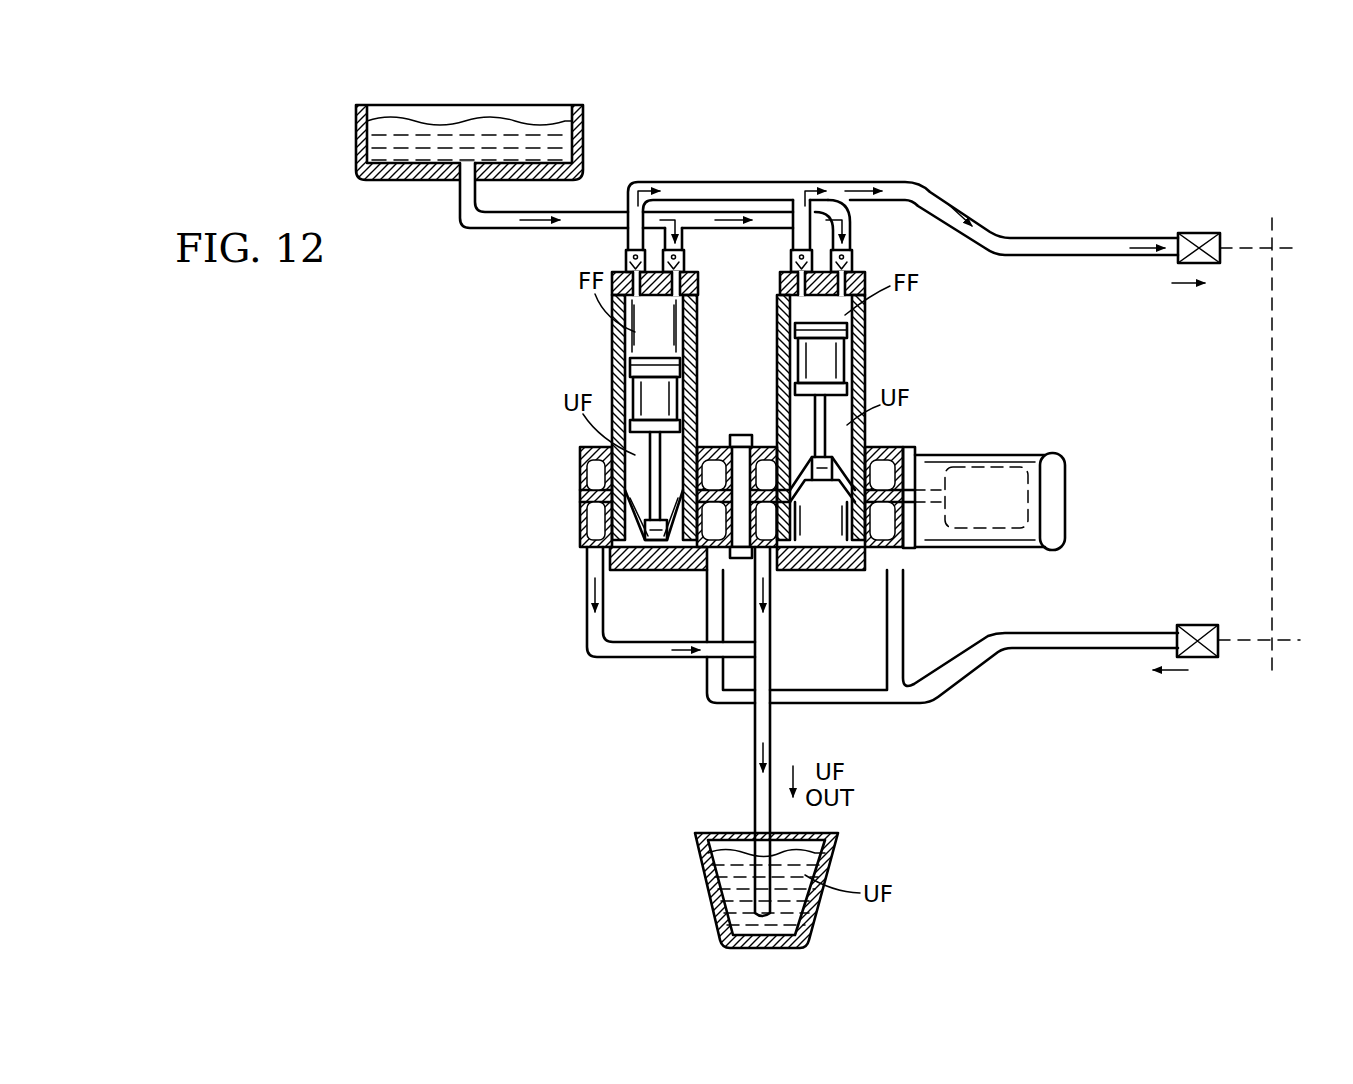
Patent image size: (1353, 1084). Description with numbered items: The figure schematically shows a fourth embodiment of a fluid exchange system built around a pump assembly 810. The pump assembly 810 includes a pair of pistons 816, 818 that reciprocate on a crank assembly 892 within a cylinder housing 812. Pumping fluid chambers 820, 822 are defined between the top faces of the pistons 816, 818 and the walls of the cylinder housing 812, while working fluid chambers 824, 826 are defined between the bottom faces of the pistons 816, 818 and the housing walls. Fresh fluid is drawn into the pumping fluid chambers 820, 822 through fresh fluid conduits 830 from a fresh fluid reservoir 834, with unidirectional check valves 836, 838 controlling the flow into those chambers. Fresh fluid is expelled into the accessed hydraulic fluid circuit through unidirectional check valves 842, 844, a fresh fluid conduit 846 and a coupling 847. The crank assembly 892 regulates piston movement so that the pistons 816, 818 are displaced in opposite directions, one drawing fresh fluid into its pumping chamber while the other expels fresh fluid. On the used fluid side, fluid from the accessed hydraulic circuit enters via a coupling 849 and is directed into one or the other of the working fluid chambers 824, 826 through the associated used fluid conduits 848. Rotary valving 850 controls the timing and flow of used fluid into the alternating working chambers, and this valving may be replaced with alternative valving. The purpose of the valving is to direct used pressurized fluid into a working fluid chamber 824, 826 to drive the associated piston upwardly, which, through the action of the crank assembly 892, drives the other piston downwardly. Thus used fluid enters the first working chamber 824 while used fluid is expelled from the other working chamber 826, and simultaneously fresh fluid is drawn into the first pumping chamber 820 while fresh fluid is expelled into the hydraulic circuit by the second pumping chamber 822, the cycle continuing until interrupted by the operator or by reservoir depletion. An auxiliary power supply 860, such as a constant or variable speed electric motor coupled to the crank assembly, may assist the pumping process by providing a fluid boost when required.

The pump assembly 810 is at (747, 170).
The cylinder housing 812 is at (692, 340).
The piston 816 is at (672, 388).
The piston 818 is at (850, 366).
The pumping fluid chamber 820 is at (848, 334).
The pumping fluid chamber 822 is at (680, 316).
The working fluid chamber 824 is at (845, 440).
The working fluid chamber 826 is at (686, 445).
The fresh fluid conduit 830 is at (525, 229).
The fresh fluid reservoir 834 is at (420, 162).
The unidirectional check valve 836 is at (686, 258).
The unidirectional check valve 838 is at (853, 258).
The unidirectional check valve 842 is at (626, 258).
The unidirectional check valve 844 is at (791, 262).
The fresh fluid conduit 846 is at (965, 210).
The coupling 847 is at (1196, 233).
The used fluid conduit 848 is at (995, 650).
The coupling 849 is at (1196, 625).
The rotary valving 850 is at (702, 562).
The auxiliary power supply 860 is at (1000, 462).
The crank assembly 892 is at (582, 528).